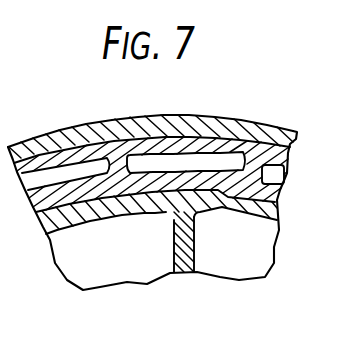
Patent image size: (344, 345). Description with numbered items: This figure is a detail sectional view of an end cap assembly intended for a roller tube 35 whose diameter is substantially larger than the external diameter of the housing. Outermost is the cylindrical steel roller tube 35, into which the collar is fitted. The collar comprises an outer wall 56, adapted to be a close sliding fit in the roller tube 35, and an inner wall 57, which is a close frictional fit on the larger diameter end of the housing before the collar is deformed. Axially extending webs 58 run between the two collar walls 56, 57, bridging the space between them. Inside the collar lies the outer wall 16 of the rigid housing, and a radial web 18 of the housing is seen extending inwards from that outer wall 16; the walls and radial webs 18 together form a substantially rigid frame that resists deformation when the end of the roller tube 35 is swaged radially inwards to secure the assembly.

The roller tube 35 is at (50, 128).
The outer wall 56 is at (80, 147).
The axially extending webs 58 is at (224, 153).
The outer wall 16 is at (47, 233).
The inner wall 57 is at (225, 212).
The radial webs 18 is at (178, 276).